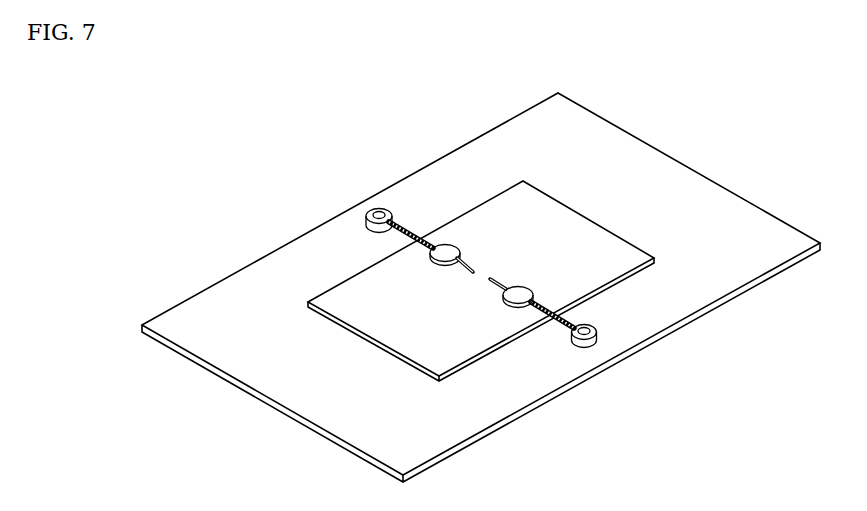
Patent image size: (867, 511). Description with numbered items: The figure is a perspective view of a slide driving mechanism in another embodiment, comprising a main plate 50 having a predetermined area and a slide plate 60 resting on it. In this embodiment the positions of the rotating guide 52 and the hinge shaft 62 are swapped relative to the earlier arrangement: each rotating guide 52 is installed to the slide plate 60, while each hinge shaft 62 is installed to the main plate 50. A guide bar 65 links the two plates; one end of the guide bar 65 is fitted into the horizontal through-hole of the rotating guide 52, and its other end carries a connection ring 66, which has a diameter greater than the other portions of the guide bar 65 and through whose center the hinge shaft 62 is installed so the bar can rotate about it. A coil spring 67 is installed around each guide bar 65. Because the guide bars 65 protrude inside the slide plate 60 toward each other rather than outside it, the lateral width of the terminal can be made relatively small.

The main plate 50 is at (712, 217).
The rotating guide 52 is at (447, 252).
The slide plate 60 is at (577, 232).
The hinge shaft 62 is at (597, 327).
The guide bar 65 is at (493, 293).
The connection ring 66 is at (596, 348).
The coil spring 67 is at (553, 313).